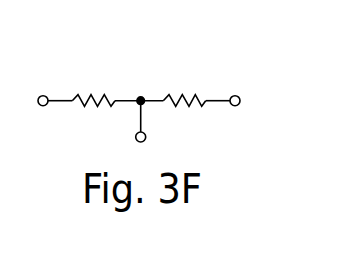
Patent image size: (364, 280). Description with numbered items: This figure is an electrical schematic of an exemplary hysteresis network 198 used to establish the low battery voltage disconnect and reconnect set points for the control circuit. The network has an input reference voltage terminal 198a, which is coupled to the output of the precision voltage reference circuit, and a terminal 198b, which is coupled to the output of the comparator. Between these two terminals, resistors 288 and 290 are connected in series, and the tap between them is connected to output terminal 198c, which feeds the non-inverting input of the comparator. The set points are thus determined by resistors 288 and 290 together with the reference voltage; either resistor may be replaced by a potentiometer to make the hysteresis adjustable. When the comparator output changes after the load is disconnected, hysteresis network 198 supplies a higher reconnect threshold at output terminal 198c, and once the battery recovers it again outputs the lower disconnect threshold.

The hysteresis network 198 is at (155, 54).
The input reference voltage terminal 198a is at (46, 96).
The terminal 198b is at (240, 100).
The output terminal 198c is at (144, 140).
The resistor 288 is at (113, 97).
The resistor 290 is at (180, 93).